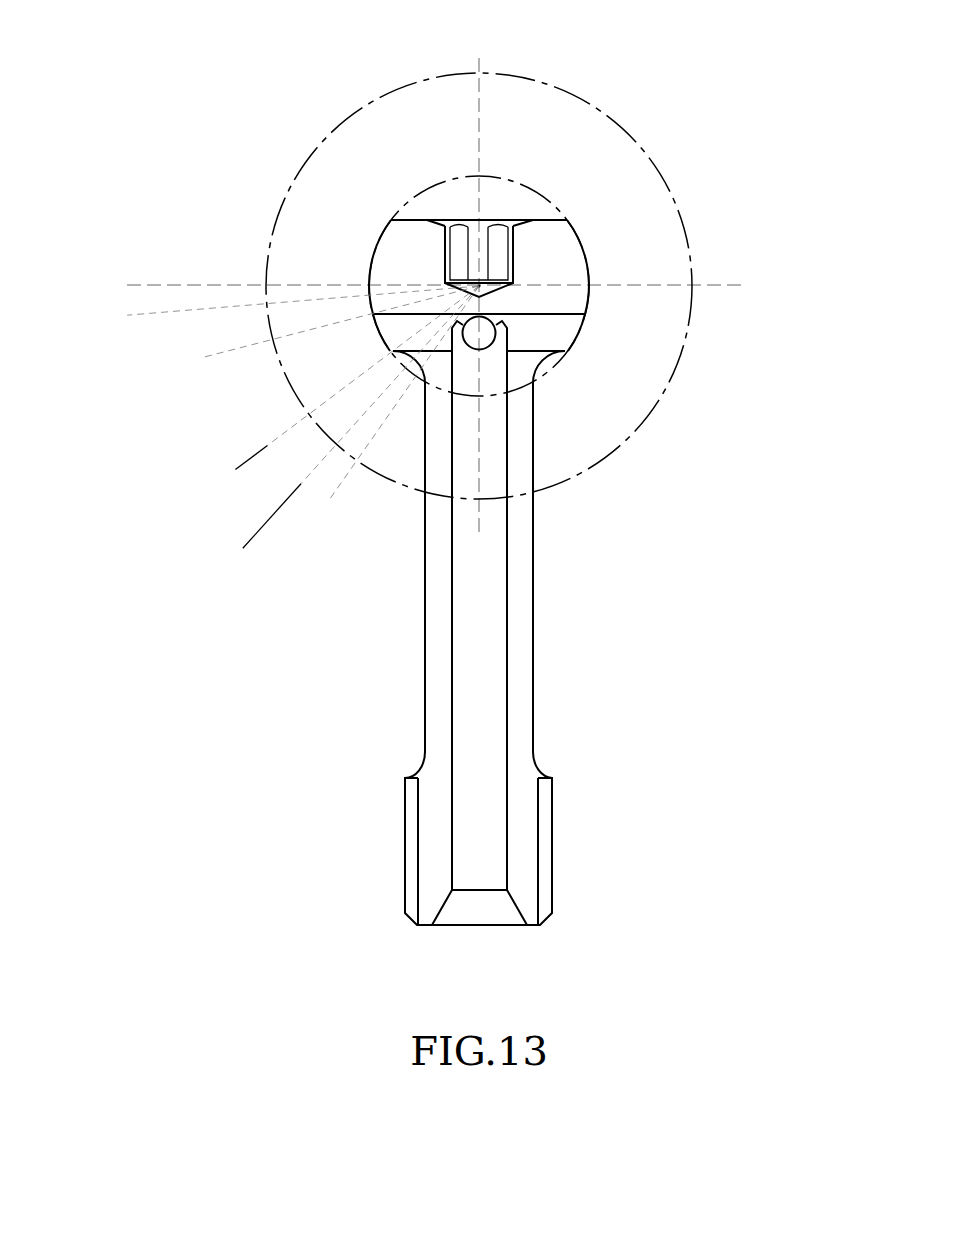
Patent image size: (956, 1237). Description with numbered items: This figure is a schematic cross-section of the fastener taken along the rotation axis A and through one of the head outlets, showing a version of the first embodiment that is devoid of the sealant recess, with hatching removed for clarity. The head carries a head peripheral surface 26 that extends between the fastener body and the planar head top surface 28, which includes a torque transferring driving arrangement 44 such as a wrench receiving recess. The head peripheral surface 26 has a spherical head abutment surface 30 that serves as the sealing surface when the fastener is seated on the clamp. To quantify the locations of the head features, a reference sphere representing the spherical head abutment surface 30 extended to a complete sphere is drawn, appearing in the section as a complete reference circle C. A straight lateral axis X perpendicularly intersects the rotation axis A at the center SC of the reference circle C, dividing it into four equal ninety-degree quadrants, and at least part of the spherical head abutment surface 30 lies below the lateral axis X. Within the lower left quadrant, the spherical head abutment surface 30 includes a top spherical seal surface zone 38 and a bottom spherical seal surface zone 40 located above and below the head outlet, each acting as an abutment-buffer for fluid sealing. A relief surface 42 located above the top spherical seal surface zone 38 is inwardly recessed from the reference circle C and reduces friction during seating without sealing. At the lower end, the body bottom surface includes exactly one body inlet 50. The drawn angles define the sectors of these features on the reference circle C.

The head peripheral surface 26 is at (382, 233).
The head top surface 28 is at (410, 219).
The spherical head abutment surface 30 is at (552, 367).
The top spherical seal surface zone 38 is at (371, 303).
The bottom spherical seal surface zone 40 is at (389, 349).
The relief surface 42 is at (370, 293).
The driving arrangement 44 is at (481, 282).
The body inlet 50 is at (478, 905).
The rotation axis A is at (480, 107).
The reference circle C is at (545, 197).
The center of the reference circle SC is at (480, 286).
The lateral axis X is at (653, 285).